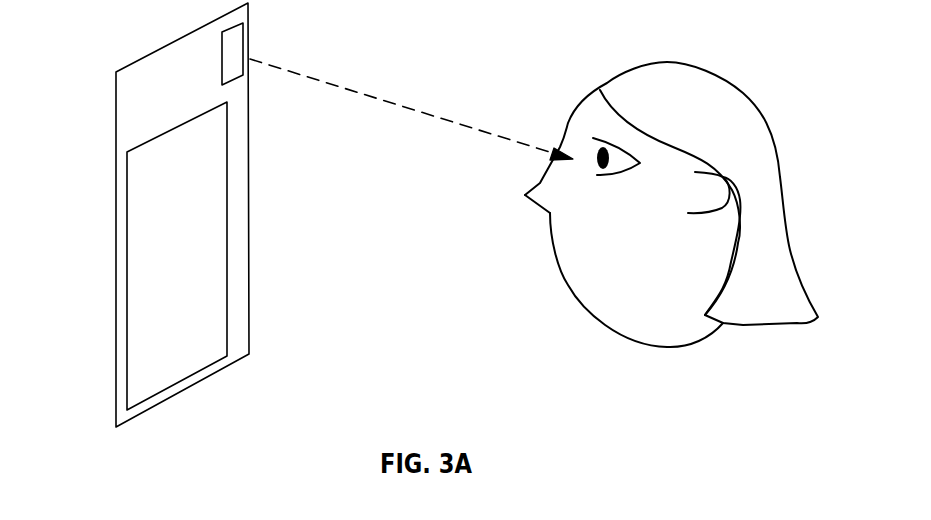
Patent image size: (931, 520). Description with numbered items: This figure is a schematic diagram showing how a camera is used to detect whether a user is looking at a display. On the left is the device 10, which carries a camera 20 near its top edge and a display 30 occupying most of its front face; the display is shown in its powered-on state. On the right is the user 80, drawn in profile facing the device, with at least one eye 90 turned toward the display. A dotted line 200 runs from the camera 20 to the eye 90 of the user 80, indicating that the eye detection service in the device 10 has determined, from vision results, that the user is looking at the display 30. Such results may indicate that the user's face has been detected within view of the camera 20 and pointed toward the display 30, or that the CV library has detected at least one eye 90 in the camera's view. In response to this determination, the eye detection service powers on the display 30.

The device 10 is at (116, 380).
The camera 20 is at (244, 39).
The display 30 is at (127, 255).
The user 80 is at (762, 70).
The eye 90 is at (628, 192).
The dotted line 200 is at (411, 109).